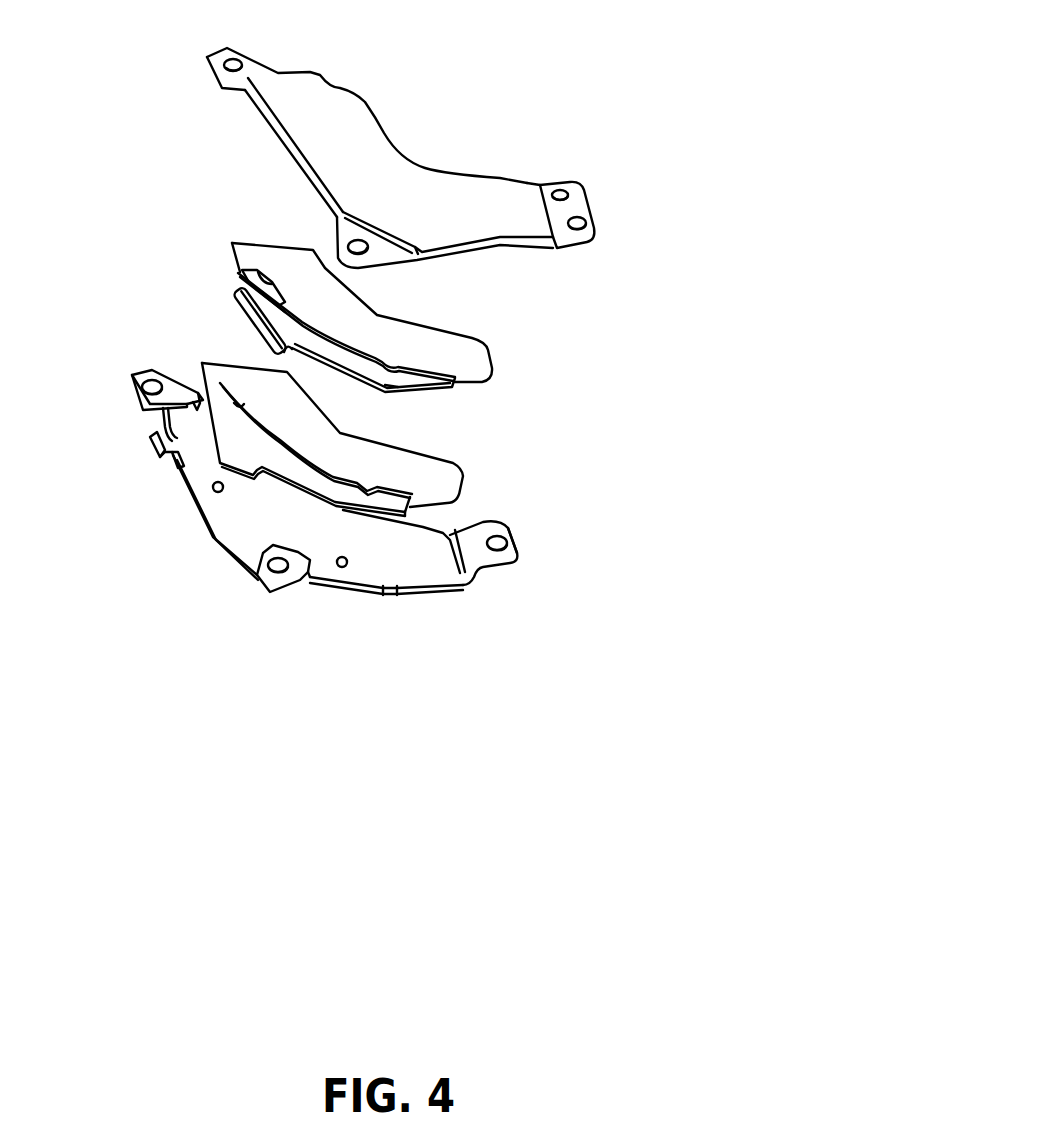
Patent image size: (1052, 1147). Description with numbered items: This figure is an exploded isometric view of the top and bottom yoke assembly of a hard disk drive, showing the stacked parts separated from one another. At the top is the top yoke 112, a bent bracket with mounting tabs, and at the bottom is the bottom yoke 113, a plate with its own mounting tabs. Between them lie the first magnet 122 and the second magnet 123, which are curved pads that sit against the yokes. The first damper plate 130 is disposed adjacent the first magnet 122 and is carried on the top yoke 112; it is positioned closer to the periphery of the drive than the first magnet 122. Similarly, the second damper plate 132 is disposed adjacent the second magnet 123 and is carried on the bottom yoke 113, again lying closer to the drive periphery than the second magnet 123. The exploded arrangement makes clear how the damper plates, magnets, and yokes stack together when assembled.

The top yoke 112 is at (437, 195).
The first magnet 122 is at (450, 342).
The second magnet 123 is at (420, 467).
The bottom yoke 113 is at (420, 572).
The first damper plate 130 is at (243, 291).
The second damper plate 132 is at (226, 438).